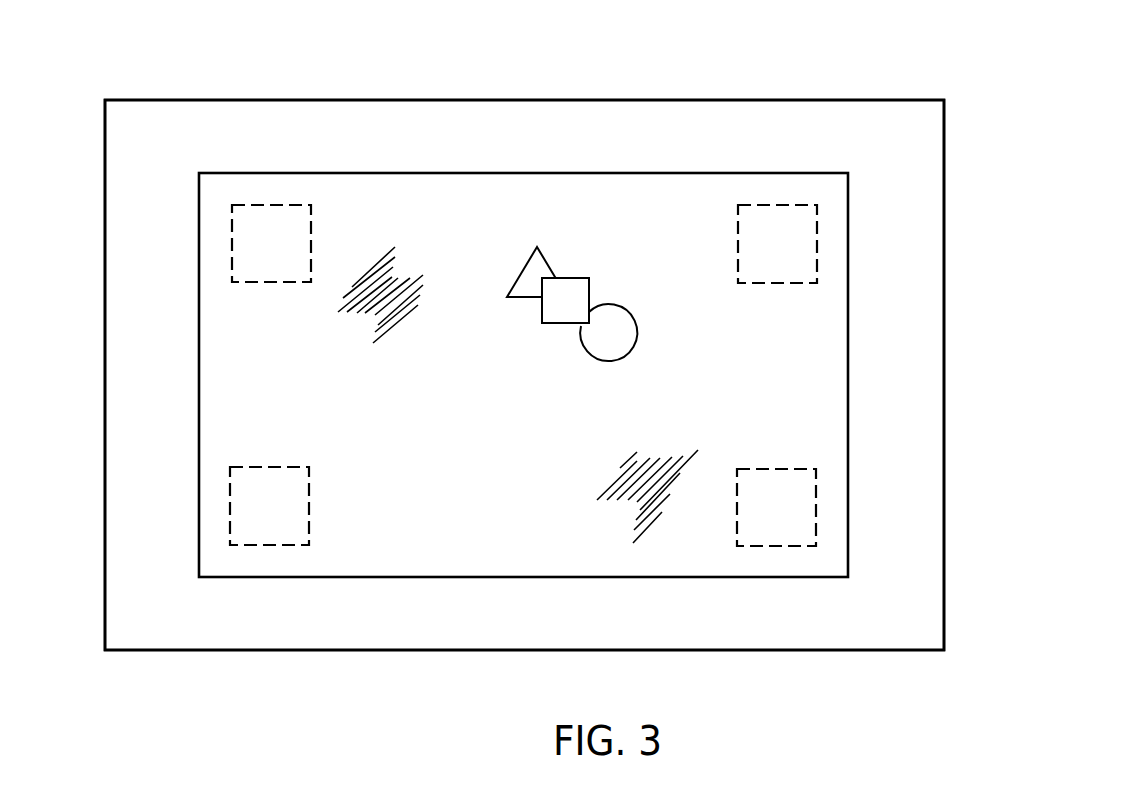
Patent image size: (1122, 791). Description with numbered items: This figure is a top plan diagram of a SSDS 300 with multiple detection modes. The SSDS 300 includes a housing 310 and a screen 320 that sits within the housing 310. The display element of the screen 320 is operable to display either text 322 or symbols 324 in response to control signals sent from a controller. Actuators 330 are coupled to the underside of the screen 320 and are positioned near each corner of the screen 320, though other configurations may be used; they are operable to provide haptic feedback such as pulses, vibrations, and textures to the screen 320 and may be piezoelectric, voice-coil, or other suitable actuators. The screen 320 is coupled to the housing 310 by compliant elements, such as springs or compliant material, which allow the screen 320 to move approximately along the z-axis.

The SSDS 300 is at (607, 353).
The housing 310 is at (932, 214).
The screen 320 is at (832, 384).
The text 322 is at (448, 393).
The symbols 324 is at (594, 280).
The actuators 330 is at (797, 502).